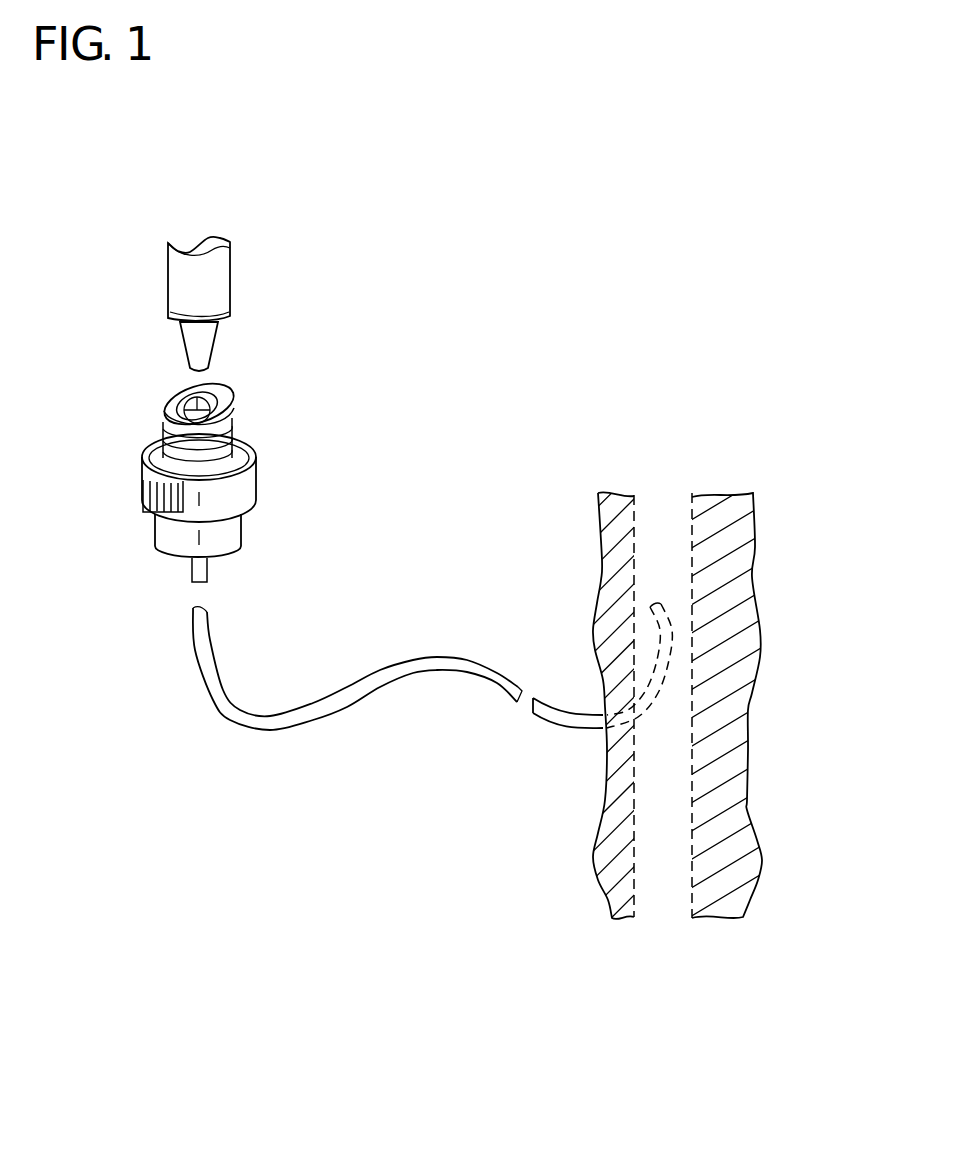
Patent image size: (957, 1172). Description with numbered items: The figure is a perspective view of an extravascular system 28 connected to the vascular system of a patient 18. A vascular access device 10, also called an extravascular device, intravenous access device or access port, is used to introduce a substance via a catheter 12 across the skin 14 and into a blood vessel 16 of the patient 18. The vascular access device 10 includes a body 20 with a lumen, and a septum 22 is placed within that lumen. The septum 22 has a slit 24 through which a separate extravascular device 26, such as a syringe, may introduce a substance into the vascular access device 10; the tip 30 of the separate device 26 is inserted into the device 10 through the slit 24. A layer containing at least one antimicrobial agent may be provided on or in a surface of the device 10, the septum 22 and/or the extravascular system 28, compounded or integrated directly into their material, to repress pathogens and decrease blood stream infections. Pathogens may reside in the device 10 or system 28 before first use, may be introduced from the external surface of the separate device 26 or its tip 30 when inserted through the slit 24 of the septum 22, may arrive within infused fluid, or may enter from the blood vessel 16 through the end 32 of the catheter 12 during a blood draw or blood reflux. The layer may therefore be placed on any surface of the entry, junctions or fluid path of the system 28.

The vascular access device 10 is at (219, 466).
The catheter 12 is at (291, 718).
The skin 14 is at (610, 890).
The blood vessel 16 is at (668, 522).
The patient 18 is at (717, 885).
The body 20 is at (237, 488).
The septum 22 is at (187, 403).
The slit 24 is at (213, 395).
The separate extravascular device 26 is at (225, 268).
The extravascular system 28 is at (206, 720).
The tip 30 is at (195, 342).
The end 32 is at (660, 605).